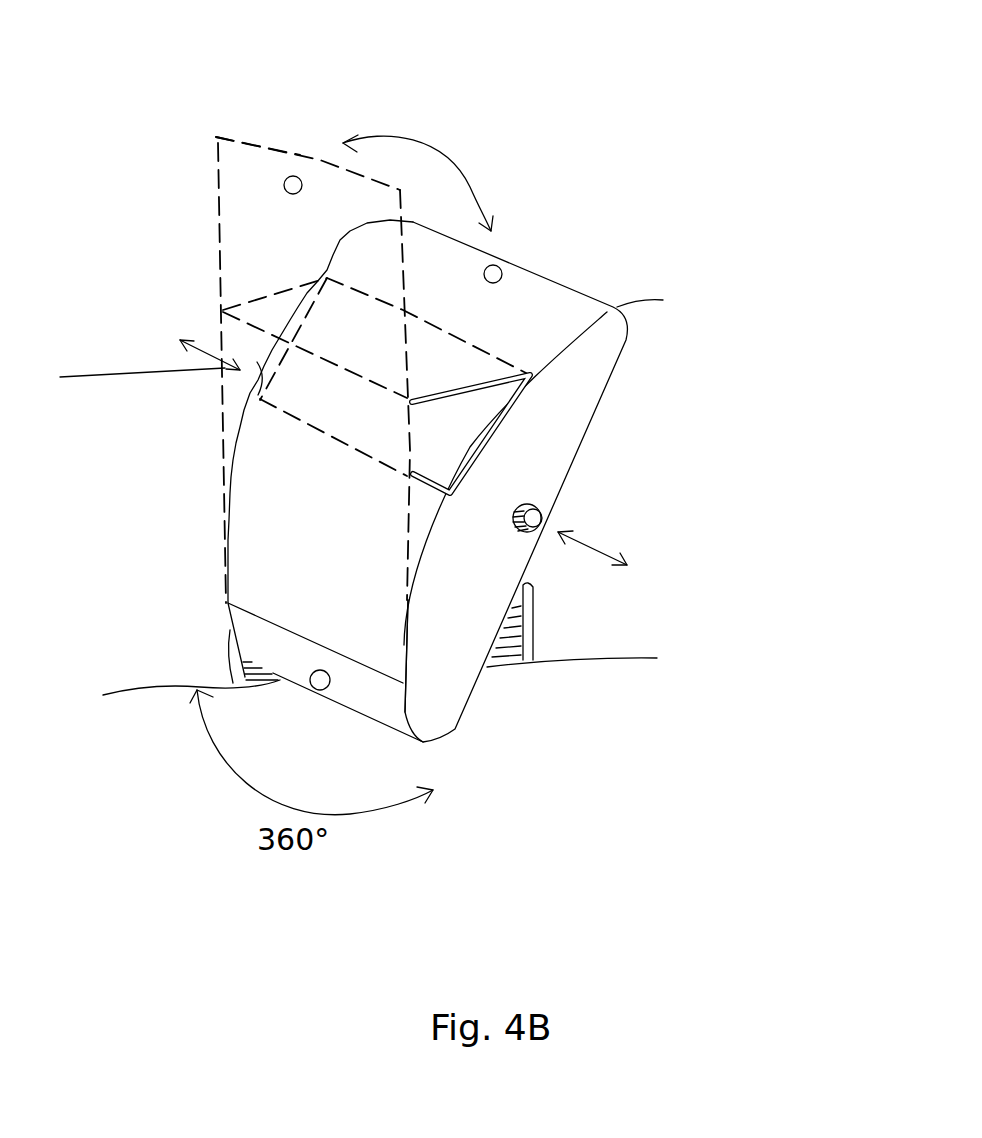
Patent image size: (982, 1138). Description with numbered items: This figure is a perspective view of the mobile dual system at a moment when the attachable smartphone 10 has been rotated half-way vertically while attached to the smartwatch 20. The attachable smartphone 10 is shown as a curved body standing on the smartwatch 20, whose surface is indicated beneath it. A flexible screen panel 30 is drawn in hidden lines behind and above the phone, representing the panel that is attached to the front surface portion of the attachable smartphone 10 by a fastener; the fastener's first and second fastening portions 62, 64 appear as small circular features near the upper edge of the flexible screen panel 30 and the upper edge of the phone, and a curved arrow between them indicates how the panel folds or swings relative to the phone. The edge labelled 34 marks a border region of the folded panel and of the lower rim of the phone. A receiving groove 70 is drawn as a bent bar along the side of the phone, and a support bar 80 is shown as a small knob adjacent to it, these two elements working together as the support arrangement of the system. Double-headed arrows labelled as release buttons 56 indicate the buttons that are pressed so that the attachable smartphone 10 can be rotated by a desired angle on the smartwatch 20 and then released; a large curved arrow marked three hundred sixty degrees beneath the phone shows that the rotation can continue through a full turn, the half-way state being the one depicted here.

The attachable smartphone 10 is at (595, 297).
The smartwatch 20 is at (521, 665).
The flexible screen panel 30 is at (235, 238).
The edge 34 is at (246, 143).
The release buttons 56 is at (250, 378).
The first fastening portion 62 is at (295, 176).
The second fastening portion 64 is at (497, 267).
The receiving groove 70 is at (497, 413).
The support bar 80 is at (478, 450).